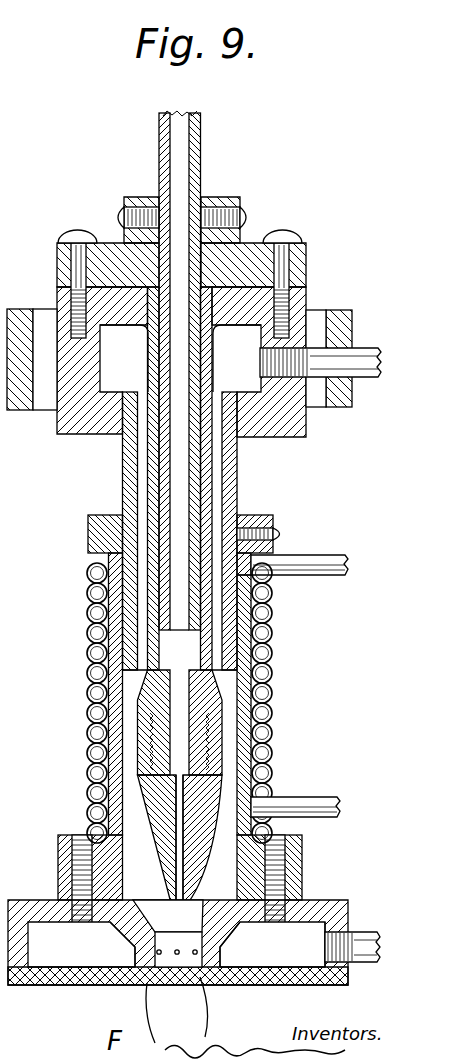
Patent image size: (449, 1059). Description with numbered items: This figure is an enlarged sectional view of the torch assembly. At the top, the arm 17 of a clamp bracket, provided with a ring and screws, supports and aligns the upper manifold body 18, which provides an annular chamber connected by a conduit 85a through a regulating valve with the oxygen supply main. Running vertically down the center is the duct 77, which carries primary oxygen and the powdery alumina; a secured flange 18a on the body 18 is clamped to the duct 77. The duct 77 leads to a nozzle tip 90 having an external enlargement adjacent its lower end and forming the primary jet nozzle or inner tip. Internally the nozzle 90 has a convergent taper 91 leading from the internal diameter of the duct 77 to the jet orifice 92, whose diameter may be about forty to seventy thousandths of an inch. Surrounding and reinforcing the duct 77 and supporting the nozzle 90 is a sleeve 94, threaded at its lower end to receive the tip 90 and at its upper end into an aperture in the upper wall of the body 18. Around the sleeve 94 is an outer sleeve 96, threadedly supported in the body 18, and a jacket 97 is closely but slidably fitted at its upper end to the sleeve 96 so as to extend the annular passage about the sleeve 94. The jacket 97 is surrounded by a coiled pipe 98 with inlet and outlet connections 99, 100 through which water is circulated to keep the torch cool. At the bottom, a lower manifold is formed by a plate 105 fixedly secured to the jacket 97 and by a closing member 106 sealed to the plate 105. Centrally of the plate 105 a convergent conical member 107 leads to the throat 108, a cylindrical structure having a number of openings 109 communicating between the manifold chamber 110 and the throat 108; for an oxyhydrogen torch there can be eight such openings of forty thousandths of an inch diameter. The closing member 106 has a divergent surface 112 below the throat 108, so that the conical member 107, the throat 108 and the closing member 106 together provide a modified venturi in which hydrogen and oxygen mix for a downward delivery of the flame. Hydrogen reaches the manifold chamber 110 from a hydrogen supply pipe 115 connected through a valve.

The arm 17 is at (15, 318).
The upper manifold body 18 is at (295, 300).
The secured flange 18a is at (246, 248).
The duct 77 is at (183, 143).
The conduit 85a is at (373, 380).
The nozzle tip 90 is at (155, 830).
The convergent taper 91 is at (172, 806).
The jet orifice 92 is at (182, 913).
The sleeve 94 is at (150, 458).
The outer sleeve 96 is at (128, 483).
The jacket 97 is at (97, 535).
The coiled pipe 98 is at (88, 642).
The inlet connection 99 is at (326, 810).
The outlet connection 100 is at (324, 575).
The plate 105 is at (313, 905).
The closing member 106 is at (313, 981).
The convergent conical member 107 is at (247, 944).
The throat 108 is at (191, 962).
The openings 109 is at (161, 956).
The manifold chamber 110 is at (311, 944).
The divergent surface 112 is at (150, 966).
The hydrogen supply pipe 115 is at (354, 937).